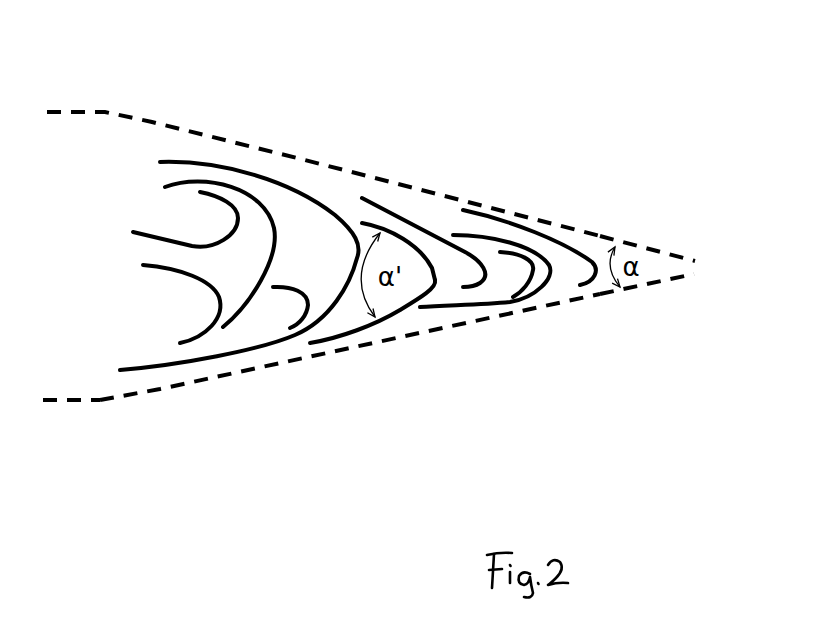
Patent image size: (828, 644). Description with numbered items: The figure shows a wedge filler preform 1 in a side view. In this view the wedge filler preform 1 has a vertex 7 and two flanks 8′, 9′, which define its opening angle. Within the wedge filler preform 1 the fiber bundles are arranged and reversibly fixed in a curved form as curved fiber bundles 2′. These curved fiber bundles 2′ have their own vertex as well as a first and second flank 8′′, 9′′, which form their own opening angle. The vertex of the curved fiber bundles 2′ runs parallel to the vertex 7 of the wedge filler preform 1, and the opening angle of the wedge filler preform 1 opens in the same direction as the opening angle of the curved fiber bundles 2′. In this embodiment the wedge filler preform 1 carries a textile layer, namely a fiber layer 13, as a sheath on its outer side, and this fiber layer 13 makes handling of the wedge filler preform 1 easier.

The flank 8′ is at (248, 138).
The flank 9′ is at (238, 380).
The first flank 8′′ is at (382, 225).
The second flank 9′′ is at (372, 322).
The wedge filler preform 1 is at (480, 202).
The curved fiber bundles 2′ is at (407, 320).
The vertex 7 is at (695, 252).
The fiber layer 13 is at (95, 408).